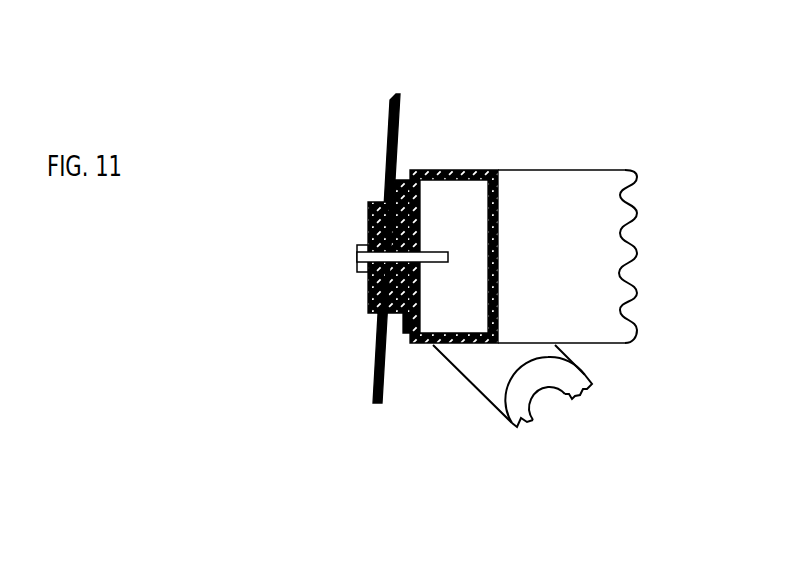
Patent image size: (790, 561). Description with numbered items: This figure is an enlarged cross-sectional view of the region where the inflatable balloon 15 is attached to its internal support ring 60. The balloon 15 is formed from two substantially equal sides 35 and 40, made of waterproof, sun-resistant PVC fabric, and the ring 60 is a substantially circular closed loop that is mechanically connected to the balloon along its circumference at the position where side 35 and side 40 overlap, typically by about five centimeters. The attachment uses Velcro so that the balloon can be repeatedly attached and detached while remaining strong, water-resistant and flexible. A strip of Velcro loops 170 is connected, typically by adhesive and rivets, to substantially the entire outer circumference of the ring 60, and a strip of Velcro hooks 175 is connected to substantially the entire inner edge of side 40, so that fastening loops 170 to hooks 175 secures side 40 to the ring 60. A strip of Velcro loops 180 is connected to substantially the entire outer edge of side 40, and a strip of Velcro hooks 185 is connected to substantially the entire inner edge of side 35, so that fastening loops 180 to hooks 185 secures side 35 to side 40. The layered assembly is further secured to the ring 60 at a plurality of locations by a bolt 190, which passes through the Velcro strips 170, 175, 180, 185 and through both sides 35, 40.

The inflatable balloon 15 is at (390, 100).
The side 40 is at (390, 127).
The strip of Velcro loops 180 is at (385, 198).
The bolt 190 is at (355, 252).
The side 35 is at (367, 300).
The strip of Velcro loops 170 is at (404, 179).
The ring 60 is at (457, 168).
The strip of Velcro hooks 185 is at (381, 318).
The strip of Velcro hooks 175 is at (398, 318).